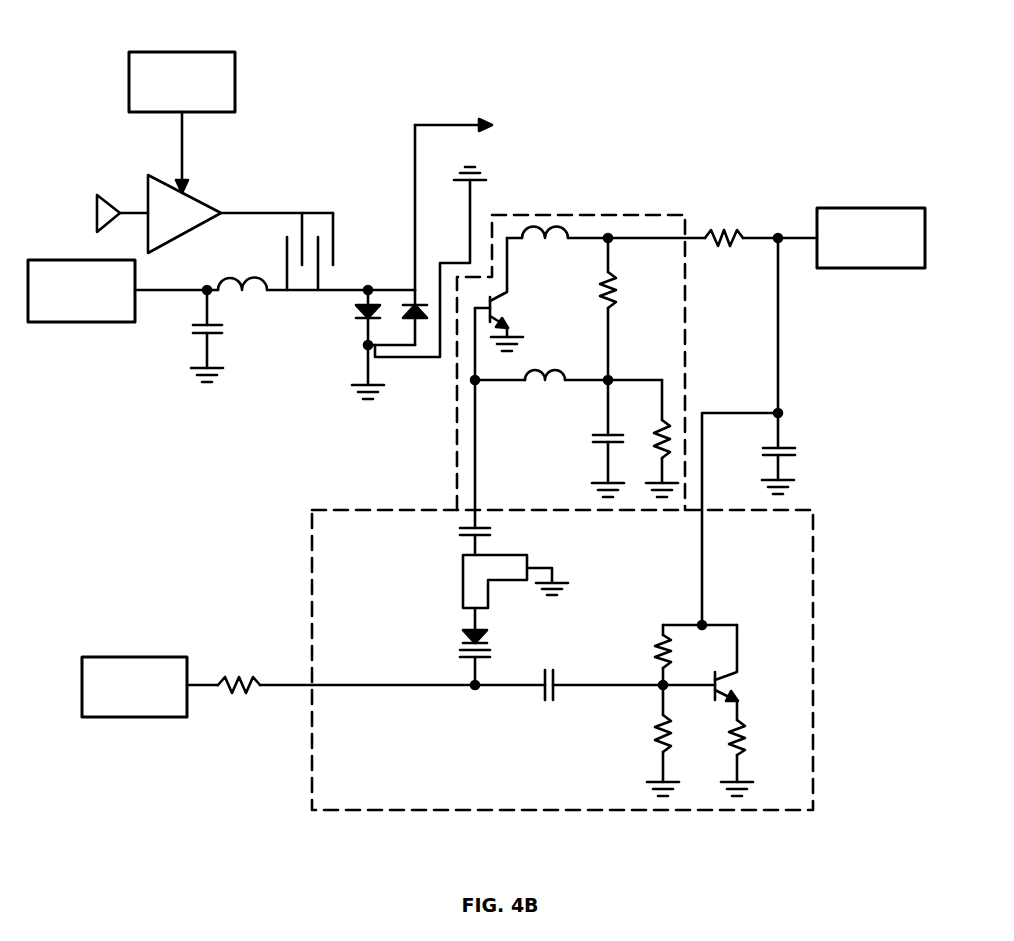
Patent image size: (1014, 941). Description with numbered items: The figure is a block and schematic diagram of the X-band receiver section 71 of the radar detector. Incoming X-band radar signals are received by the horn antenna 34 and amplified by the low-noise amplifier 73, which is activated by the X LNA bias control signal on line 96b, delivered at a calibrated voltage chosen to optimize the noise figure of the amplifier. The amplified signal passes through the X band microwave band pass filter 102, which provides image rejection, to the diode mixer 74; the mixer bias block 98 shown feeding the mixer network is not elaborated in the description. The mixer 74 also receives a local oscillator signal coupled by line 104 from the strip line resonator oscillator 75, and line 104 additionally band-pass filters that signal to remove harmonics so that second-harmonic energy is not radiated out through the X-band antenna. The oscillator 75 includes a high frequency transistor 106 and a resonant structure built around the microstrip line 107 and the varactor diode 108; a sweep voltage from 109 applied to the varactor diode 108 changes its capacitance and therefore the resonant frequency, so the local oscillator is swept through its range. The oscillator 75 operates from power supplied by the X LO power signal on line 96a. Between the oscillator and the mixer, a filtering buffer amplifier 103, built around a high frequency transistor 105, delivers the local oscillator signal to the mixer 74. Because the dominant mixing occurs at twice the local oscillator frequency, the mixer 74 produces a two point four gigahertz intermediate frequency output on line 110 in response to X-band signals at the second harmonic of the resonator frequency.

The X-band receiver section 71 is at (688, 66).
The horn antenna 34 is at (118, 190).
The low-noise amplifier 73 is at (196, 199).
The X LNA bias signal line 96b is at (180, 52).
The mixer bias supply 98 is at (43, 260).
The X band microwave band pass filter 102 is at (350, 228).
The diode mixer 74 is at (345, 331).
The line 104 is at (452, 259).
The intermediate frequency output line 110 is at (461, 126).
The filtering buffer amplifier 103 is at (656, 205).
The high frequency transistor 105 is at (540, 322).
The X LO power signal line 96a is at (876, 208).
The strip line resonator oscillator 75 is at (300, 577).
The microstrip line 107 is at (462, 590).
The varactor diode 108 is at (461, 638).
The sweep voltage source 109 is at (130, 718).
The high frequency transistor 106 is at (735, 684).